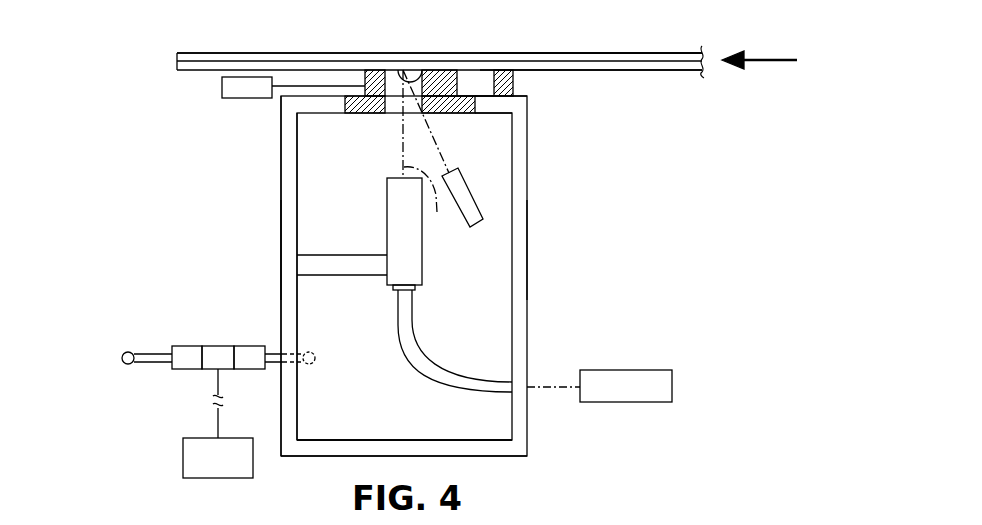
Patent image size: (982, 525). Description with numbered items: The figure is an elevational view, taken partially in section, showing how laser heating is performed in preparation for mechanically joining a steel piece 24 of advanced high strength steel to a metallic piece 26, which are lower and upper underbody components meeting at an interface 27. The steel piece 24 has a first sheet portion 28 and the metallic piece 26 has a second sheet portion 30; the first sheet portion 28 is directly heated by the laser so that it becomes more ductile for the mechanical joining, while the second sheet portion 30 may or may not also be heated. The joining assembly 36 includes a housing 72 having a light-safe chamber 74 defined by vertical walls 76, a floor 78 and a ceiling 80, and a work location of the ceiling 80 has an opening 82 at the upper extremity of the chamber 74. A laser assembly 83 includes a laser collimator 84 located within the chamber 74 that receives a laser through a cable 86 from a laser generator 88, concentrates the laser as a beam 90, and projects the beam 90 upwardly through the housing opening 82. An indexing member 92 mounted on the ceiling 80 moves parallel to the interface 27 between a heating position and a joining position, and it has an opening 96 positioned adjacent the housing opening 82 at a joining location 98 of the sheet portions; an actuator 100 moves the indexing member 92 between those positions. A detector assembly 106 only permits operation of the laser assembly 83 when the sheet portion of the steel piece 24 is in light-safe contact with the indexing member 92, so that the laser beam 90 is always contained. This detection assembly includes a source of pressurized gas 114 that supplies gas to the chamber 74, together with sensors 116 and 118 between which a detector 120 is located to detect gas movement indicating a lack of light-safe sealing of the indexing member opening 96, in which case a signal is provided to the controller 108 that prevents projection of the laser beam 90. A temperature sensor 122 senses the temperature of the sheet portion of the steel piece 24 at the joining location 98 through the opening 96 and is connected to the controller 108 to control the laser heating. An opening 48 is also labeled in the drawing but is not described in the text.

The steel piece 24 is at (193, 71).
The metallic piece 26 is at (200, 53).
The interface 27 is at (226, 61).
The first sheet portion 28 is at (523, 70).
The second sheet portion 30 is at (505, 53).
The joining assembly 36 is at (654, 115).
The opening 48 is at (474, 82).
The housing 72 is at (534, 238).
The light-safe chamber 74 is at (297, 145).
The vertical walls 76 is at (281, 248).
The floor 78 is at (482, 457).
The ceiling 80 is at (492, 109).
The opening 82 is at (390, 113).
The laser assembly 83 is at (381, 335).
The laser collimator 84 is at (387, 232).
The cable 86 is at (420, 352).
The laser generator 88 is at (639, 396).
The laser beam 90 is at (426, 154).
The indexing member 92 is at (517, 86).
The opening 96 is at (385, 82).
The joining location 98 is at (425, 77).
The actuator 100 is at (248, 99).
The detector assembly 106 is at (160, 386).
The controller 108 is at (234, 465).
The source of pressurized gas 114 is at (128, 352).
The sensor 116 is at (190, 348).
The sensor 118 is at (250, 347).
The detector 120 is at (218, 347).
The temperature sensor 122 is at (475, 190).